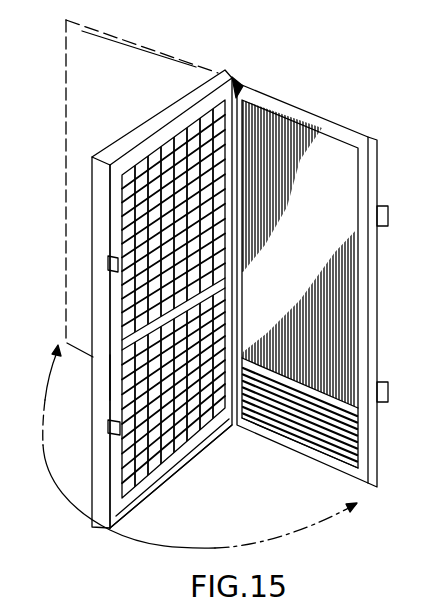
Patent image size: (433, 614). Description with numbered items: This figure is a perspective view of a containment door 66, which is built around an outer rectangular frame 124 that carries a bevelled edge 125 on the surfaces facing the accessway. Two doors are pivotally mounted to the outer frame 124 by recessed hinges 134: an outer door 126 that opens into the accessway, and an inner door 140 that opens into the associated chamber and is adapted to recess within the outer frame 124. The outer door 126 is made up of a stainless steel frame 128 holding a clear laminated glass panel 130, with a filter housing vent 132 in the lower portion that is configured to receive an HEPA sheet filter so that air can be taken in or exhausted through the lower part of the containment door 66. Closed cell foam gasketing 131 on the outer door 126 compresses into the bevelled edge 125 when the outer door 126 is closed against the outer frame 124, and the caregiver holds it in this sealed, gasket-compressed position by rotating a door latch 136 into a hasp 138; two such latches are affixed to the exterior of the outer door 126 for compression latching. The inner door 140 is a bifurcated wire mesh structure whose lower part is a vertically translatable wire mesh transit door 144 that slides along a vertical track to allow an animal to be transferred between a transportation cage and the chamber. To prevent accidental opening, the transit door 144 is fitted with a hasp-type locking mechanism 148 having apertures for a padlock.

The containment door 66 is at (266, 60).
The outer rectangular frame 124 is at (104, 522).
The bevelled edge 125 is at (124, 528).
The outer door 126 is at (317, 128).
The stainless steel frame 128 is at (377, 163).
The clear laminated glass panel 130 is at (358, 262).
The closed cell foam gasketing 131 is at (334, 456).
The filter housing vent 132 is at (318, 430).
The recessed hinges 134 is at (241, 88).
The door latch 136 is at (221, 446).
The hasp 138 is at (108, 264).
The inner door 140 is at (112, 297).
The wire mesh transit door 144 is at (113, 392).
The hasp-type locking mechanism 148 is at (113, 362).